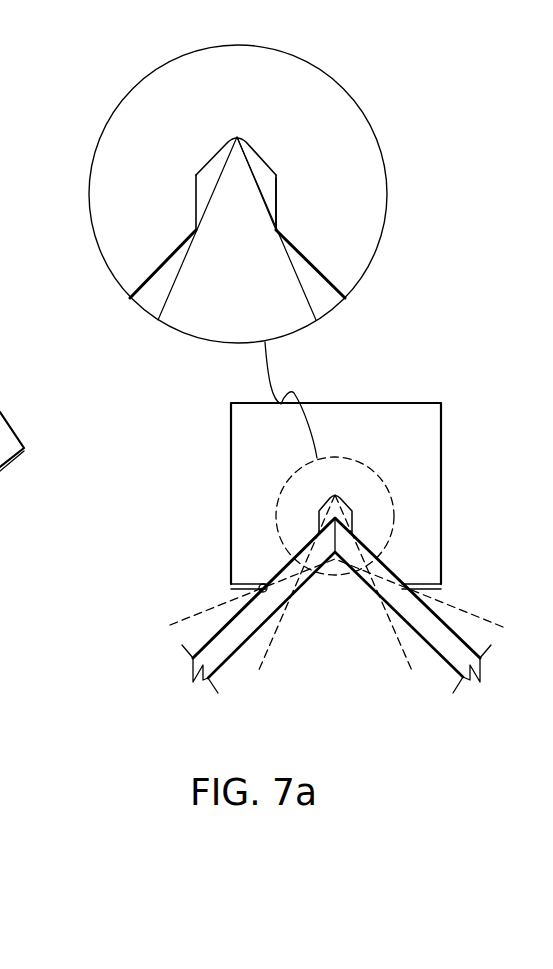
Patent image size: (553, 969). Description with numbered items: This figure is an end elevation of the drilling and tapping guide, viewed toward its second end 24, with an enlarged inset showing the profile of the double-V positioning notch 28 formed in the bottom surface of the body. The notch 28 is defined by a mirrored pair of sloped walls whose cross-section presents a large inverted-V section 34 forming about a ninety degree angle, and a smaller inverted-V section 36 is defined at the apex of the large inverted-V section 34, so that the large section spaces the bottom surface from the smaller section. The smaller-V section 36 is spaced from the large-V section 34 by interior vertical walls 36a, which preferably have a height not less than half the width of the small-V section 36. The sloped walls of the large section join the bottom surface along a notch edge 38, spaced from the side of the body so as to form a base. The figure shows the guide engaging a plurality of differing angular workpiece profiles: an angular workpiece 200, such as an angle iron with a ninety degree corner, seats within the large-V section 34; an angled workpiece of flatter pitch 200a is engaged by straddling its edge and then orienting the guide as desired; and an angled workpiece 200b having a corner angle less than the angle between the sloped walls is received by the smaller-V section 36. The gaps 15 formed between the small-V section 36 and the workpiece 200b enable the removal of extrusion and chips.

The gaps 15 is at (262, 172).
The second end 24 is at (273, 102).
The double-V positioning notch 28 is at (308, 518).
The large inverted-V section 34 is at (170, 253).
The smaller inverted-V section 36 is at (207, 148).
The interior vertical walls 36a is at (277, 203).
The notch edge 38 is at (259, 586).
The angular workpiece 200 is at (467, 645).
The angled workpiece of flatter pitch 200a is at (453, 605).
The angled workpiece with sharper corner 200b is at (296, 318).